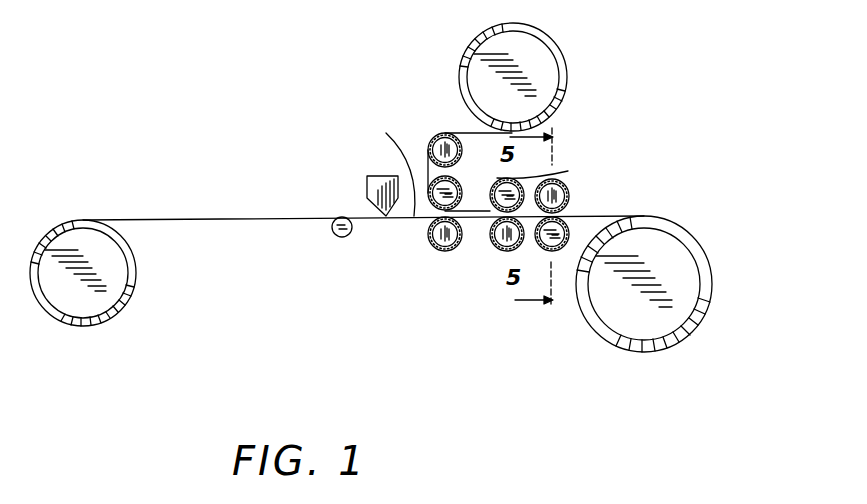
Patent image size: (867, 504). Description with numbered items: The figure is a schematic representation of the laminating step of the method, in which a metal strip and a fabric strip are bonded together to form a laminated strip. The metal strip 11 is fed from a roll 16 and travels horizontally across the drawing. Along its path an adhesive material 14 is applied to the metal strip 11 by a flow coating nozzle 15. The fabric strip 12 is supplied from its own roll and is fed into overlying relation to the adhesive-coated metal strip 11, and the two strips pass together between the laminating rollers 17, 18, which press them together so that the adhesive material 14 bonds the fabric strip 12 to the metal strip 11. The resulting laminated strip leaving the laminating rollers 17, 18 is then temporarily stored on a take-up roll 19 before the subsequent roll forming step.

The metal strip 11 is at (226, 217).
The fabric strip 12 is at (513, 131).
The adhesive material 14 is at (382, 161).
The flow coating nozzle 15 is at (367, 186).
The roll 16 is at (93, 327).
The laminating roller 17 is at (563, 181).
The laminating roller 18 is at (543, 248).
The take-up roll 19 is at (712, 275).